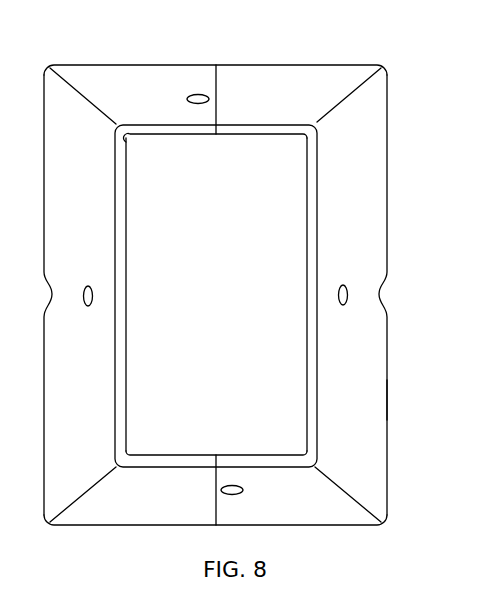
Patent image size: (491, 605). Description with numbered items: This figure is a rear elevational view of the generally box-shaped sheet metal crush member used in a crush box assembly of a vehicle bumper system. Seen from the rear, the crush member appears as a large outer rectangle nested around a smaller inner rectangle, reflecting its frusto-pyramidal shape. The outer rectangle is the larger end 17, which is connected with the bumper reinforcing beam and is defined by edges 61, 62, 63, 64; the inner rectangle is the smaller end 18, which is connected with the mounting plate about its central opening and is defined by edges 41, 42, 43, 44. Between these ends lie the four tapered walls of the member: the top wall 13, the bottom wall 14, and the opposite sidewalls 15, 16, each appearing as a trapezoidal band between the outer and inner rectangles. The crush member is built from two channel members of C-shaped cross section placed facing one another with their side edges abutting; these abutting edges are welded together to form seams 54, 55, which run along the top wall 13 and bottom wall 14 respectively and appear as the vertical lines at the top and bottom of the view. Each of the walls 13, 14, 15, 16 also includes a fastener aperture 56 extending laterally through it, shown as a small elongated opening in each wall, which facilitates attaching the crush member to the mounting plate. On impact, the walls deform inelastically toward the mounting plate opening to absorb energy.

The top wall 13 is at (216, 287).
The bottom wall 14 is at (182, 514).
The sidewall 15 is at (60, 204).
The sidewall 16 is at (372, 182).
The larger end 17 is at (97, 64).
The smaller end 18 is at (115, 396).
The edge 41 is at (170, 137).
The edge 42 is at (202, 456).
The edge 43 is at (118, 310).
The edge 44 is at (312, 280).
The seam 54 is at (213, 82).
The seam 55 is at (217, 505).
The fastener aperture 56 is at (190, 96).
The edge 61 is at (320, 63).
The edge 62 is at (300, 526).
The edge 63 is at (44, 382).
The edge 64 is at (388, 398).